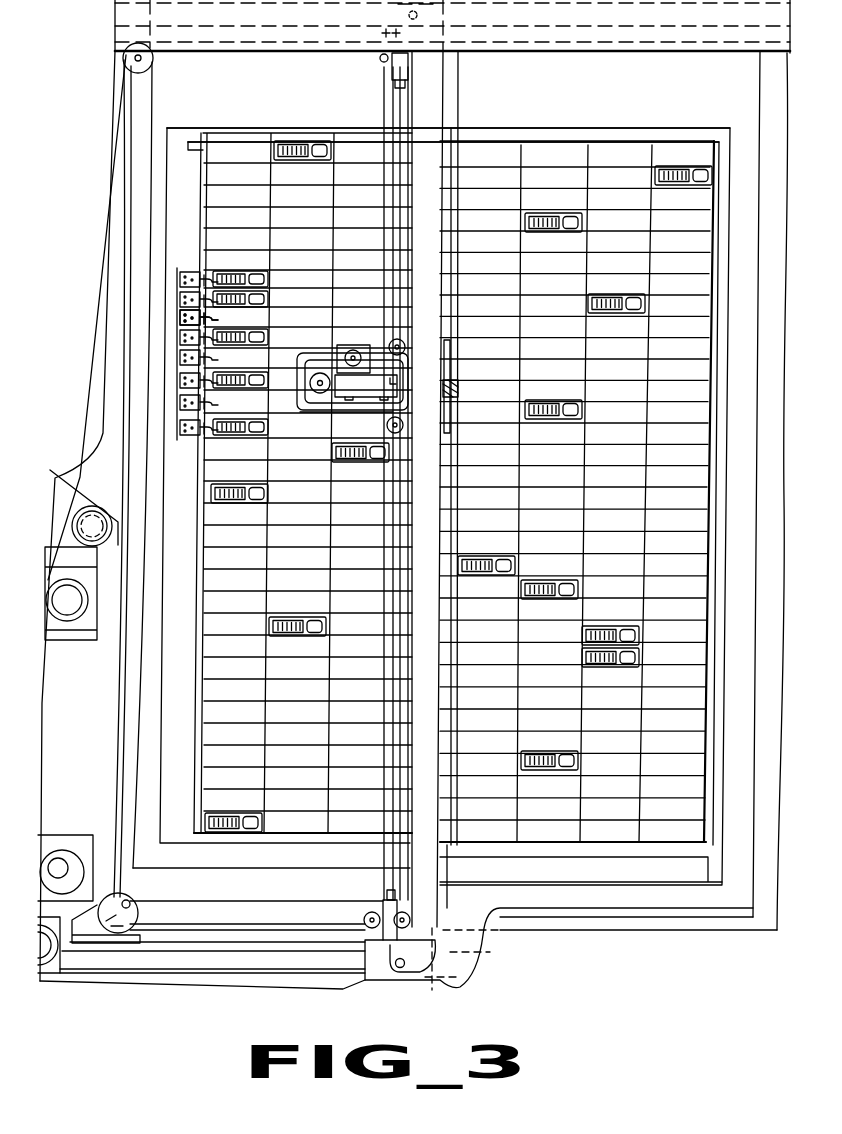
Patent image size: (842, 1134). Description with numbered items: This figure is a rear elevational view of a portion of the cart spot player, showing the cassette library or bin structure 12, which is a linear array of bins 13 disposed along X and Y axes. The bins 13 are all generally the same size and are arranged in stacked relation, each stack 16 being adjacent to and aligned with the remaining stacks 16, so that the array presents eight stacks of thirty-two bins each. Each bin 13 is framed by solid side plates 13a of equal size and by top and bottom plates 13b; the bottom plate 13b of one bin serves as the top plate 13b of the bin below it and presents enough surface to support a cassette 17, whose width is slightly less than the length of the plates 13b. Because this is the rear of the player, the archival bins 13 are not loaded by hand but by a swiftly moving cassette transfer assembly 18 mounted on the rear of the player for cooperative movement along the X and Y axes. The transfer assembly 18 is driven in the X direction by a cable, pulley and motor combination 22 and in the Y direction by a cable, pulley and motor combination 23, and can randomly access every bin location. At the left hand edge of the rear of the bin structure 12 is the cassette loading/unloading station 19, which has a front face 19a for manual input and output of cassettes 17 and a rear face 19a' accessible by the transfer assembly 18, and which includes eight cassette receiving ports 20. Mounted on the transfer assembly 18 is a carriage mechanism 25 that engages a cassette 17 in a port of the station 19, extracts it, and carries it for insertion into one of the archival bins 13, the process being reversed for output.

The bin structure 12 is at (478, 117).
The bin 13 is at (600, 464).
The side plate 13a is at (597, 181).
The top and bottom plate 13b is at (601, 215).
The stack 16 is at (307, 112).
The cassette 17 is at (530, 212).
The cassette transfer assembly 18 is at (478, 362).
The cassette loading/unloading station 19 is at (172, 321).
The rear face 19a' is at (131, 335).
The front face 19a is at (199, 317).
The cassette receiving port 20 is at (228, 437).
The cable, pulley and motor combination for X direction 22 is at (50, 838).
The cable, pulley and motor combination for Y direction 23 is at (63, 493).
The carriage mechanism 25 is at (356, 346).